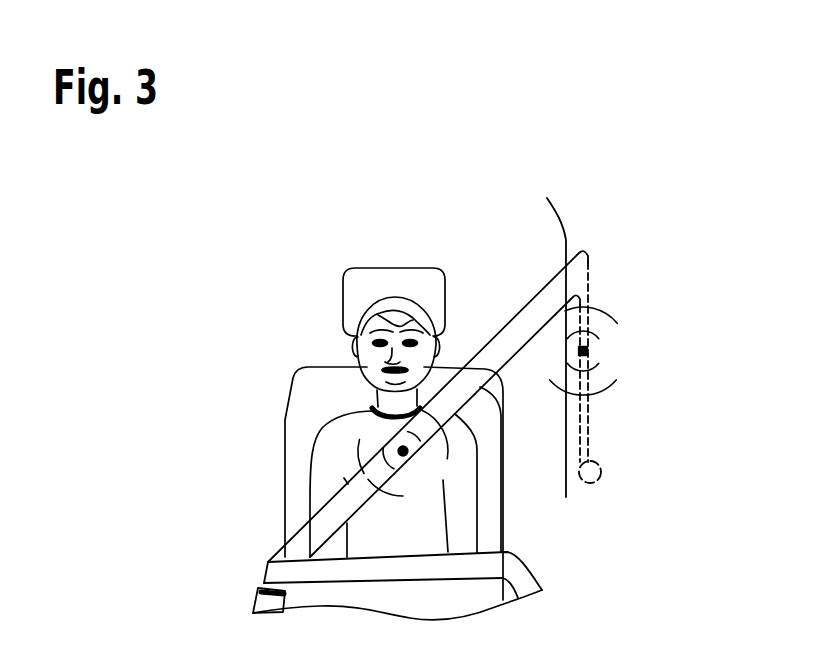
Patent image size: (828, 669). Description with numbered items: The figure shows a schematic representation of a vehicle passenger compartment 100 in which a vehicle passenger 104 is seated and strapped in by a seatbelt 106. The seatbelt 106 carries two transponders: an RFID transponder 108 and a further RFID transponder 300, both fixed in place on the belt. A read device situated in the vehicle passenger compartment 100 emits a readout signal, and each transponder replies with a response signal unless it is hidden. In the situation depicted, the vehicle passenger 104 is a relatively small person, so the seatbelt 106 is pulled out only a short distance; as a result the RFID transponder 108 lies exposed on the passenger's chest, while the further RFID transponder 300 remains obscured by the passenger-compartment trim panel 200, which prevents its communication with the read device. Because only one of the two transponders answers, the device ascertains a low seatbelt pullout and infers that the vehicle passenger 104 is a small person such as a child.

The vehicle passenger compartment 100 is at (243, 256).
The vehicle passenger 104 is at (395, 306).
The seatbelt 106 is at (515, 333).
The RFID transponder 108 is at (408, 460).
The passenger-compartment trim panel 200 is at (560, 222).
The further RFID transponder 300 is at (588, 351).